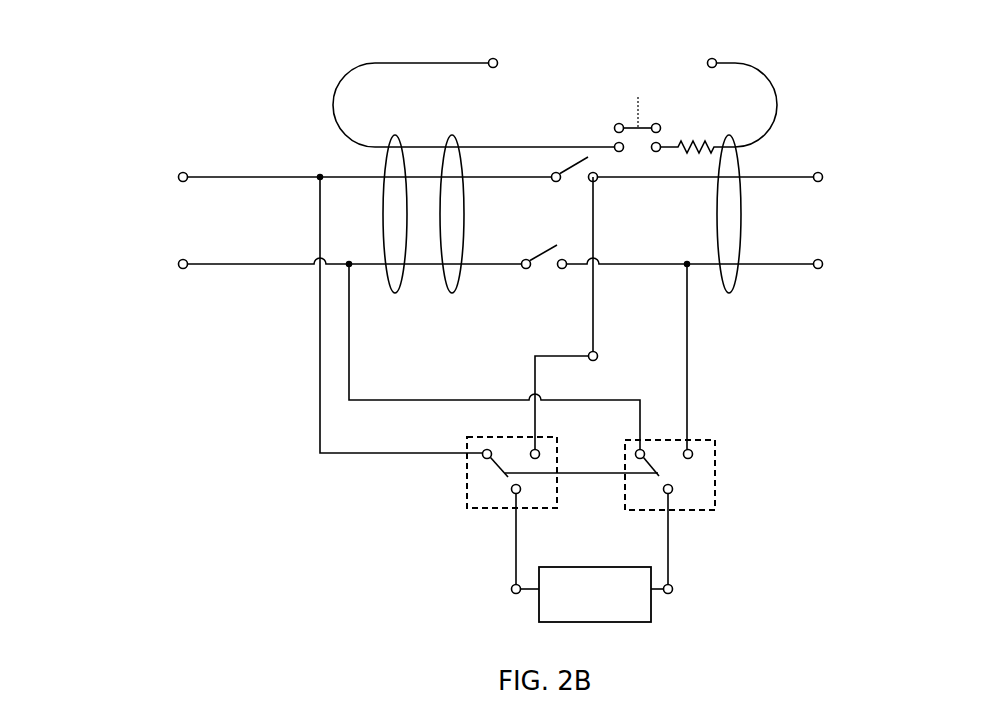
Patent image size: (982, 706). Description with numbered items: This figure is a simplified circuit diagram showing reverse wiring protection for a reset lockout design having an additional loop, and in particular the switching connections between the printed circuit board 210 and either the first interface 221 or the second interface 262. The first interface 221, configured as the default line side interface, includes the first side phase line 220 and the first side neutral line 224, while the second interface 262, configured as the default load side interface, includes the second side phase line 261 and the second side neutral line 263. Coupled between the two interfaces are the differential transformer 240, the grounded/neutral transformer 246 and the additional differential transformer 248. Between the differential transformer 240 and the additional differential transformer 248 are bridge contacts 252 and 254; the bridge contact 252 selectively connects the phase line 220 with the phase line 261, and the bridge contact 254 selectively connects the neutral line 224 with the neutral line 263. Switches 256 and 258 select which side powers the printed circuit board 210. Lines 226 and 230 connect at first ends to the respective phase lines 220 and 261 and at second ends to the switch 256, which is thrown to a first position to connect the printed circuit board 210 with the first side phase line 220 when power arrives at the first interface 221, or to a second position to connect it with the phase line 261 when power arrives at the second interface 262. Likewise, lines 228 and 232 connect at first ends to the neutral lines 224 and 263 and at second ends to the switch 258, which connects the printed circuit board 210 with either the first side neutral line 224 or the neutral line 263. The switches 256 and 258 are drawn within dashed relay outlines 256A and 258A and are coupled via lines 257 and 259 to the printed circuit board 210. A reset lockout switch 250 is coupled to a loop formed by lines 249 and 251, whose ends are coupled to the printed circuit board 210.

The printed circuit board 210 is at (595, 594).
The first side phase line 220 is at (268, 176).
The first interface 221 is at (112, 210).
The first side neutral line 224 is at (268, 267).
The line 226 is at (318, 386).
The line 228 is at (350, 355).
The line 230 is at (591, 331).
The line 232 is at (690, 346).
The differential transformer 240 is at (384, 165).
The grounded/neutral transformer 246 is at (452, 140).
The additional differential transformer 248 is at (739, 167).
The line 249 is at (771, 83).
The reset lockout switch 250 is at (638, 80).
The line 251 is at (433, 62).
The bridge contact 252 is at (553, 172).
The bridge contact 254 is at (524, 259).
The switch 256 is at (503, 478).
The first relay 256A is at (467, 467).
The line 257 is at (515, 534).
The switch 258 is at (655, 478).
The second relay 258A is at (715, 468).
The line 259 is at (670, 545).
The second side phase line 261 is at (803, 174).
The second interface 262 is at (861, 185).
The second side neutral line 263 is at (807, 266).